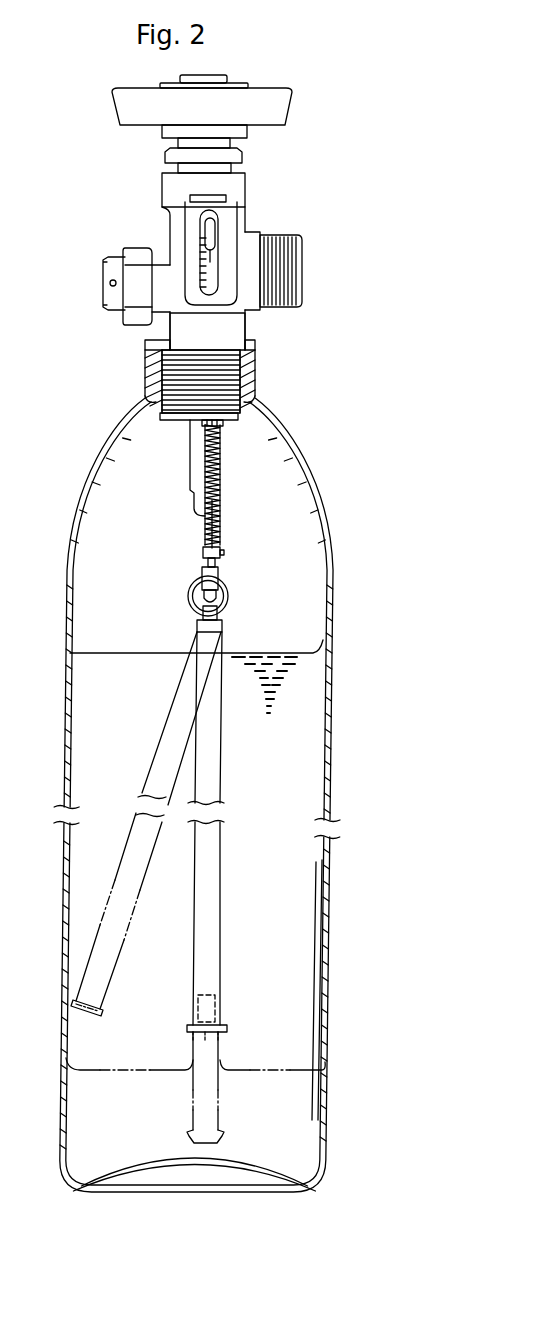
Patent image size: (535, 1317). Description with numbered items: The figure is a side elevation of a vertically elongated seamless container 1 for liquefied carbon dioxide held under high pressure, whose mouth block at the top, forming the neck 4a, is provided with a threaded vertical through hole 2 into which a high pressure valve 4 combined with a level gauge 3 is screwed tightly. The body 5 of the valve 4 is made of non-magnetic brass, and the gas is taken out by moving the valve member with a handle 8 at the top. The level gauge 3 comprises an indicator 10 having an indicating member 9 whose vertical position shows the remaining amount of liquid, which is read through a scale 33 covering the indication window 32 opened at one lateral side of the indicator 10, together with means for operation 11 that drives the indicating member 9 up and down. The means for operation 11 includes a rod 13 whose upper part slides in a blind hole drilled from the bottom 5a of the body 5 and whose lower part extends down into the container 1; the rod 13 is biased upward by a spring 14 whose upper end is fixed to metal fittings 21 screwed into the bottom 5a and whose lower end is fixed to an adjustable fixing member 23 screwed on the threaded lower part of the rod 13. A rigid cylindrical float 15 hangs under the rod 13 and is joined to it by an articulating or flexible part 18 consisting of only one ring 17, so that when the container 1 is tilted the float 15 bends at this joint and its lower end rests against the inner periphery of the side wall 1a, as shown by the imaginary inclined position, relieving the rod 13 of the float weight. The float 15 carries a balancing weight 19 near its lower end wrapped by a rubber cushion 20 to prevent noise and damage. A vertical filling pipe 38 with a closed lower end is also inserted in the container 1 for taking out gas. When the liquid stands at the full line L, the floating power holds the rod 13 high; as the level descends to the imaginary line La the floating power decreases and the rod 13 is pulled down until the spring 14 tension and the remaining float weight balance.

The container 1 is at (322, 437).
The side wall 1a is at (320, 845).
The vertical through hole 2 is at (230, 382).
The level gauge 3 is at (233, 225).
The high pressure valve 4 is at (162, 190).
The cylinder neck 4a is at (172, 378).
The body 5 is at (232, 328).
The bottom 5a is at (182, 420).
The handle 8 is at (278, 97).
The indicating member 9 is at (208, 237).
The indicator 10 is at (208, 270).
The means for operation 11 is at (245, 618).
The rod 13 is at (220, 490).
The spring 14 is at (220, 517).
The rigid cylindrical float 15 is at (202, 855).
The ring 17 is at (235, 602).
The articulating or flexible part 18 is at (235, 632).
The balancing weight 19 is at (217, 993).
The cushion 20 is at (223, 1025).
The metal fittings 21 is at (223, 423).
The adjustable fixing member 23 is at (202, 550).
The indication window 32 is at (213, 213).
The scale 33 is at (200, 233).
The vertical filling pipe 38 is at (190, 468).
The full line level L is at (313, 648).
The imaginary line level La is at (303, 1068).